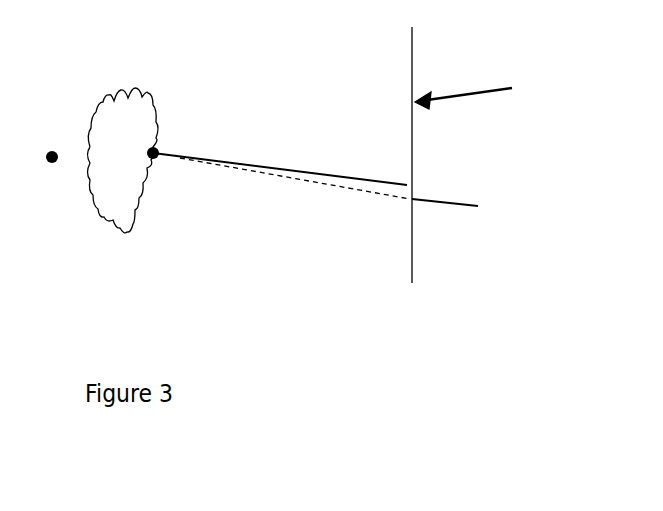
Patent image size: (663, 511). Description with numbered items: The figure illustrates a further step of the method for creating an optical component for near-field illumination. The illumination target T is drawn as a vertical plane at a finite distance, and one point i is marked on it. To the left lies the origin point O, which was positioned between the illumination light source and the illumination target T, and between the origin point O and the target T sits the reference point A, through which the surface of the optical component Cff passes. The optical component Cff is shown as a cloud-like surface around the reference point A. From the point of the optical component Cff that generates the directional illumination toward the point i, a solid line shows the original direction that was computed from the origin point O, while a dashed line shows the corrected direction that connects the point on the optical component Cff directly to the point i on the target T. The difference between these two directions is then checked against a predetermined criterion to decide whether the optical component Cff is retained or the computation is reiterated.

The origin point O is at (43, 185).
The reference point A is at (154, 189).
The optical component Cff is at (122, 147).
The illumination target T is at (478, 155).
The point of the illumination target i is at (457, 204).